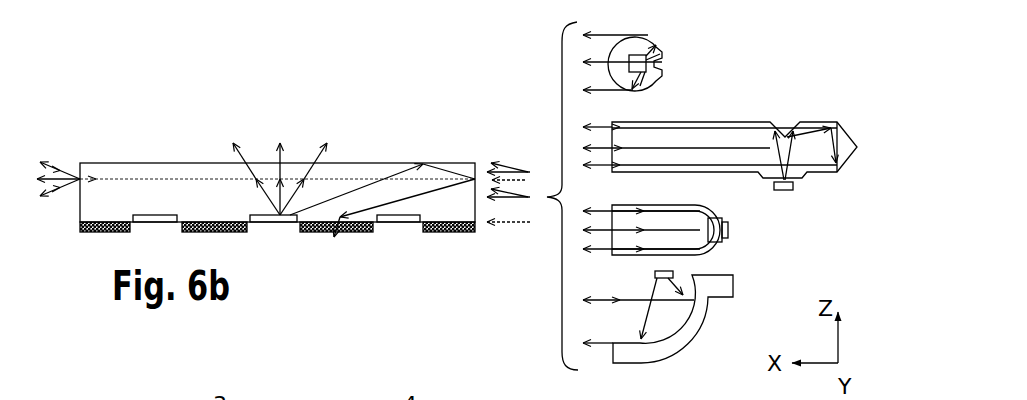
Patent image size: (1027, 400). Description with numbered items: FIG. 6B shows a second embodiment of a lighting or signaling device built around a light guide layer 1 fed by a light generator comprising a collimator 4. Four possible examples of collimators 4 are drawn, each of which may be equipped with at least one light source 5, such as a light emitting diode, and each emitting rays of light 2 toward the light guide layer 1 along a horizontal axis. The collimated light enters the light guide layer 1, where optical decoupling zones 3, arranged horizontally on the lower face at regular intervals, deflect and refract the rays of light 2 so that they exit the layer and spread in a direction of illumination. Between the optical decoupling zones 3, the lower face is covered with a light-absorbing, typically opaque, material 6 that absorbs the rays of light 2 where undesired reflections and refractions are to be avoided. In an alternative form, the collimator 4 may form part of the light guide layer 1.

The light guide layer 1 is at (357, 130).
The rays of light 2 is at (510, 172).
The optical decoupling zones 3 is at (160, 213).
The collimator 4 is at (668, 61).
The light source 5 is at (794, 189).
The light-absorbing material 6 is at (97, 231).